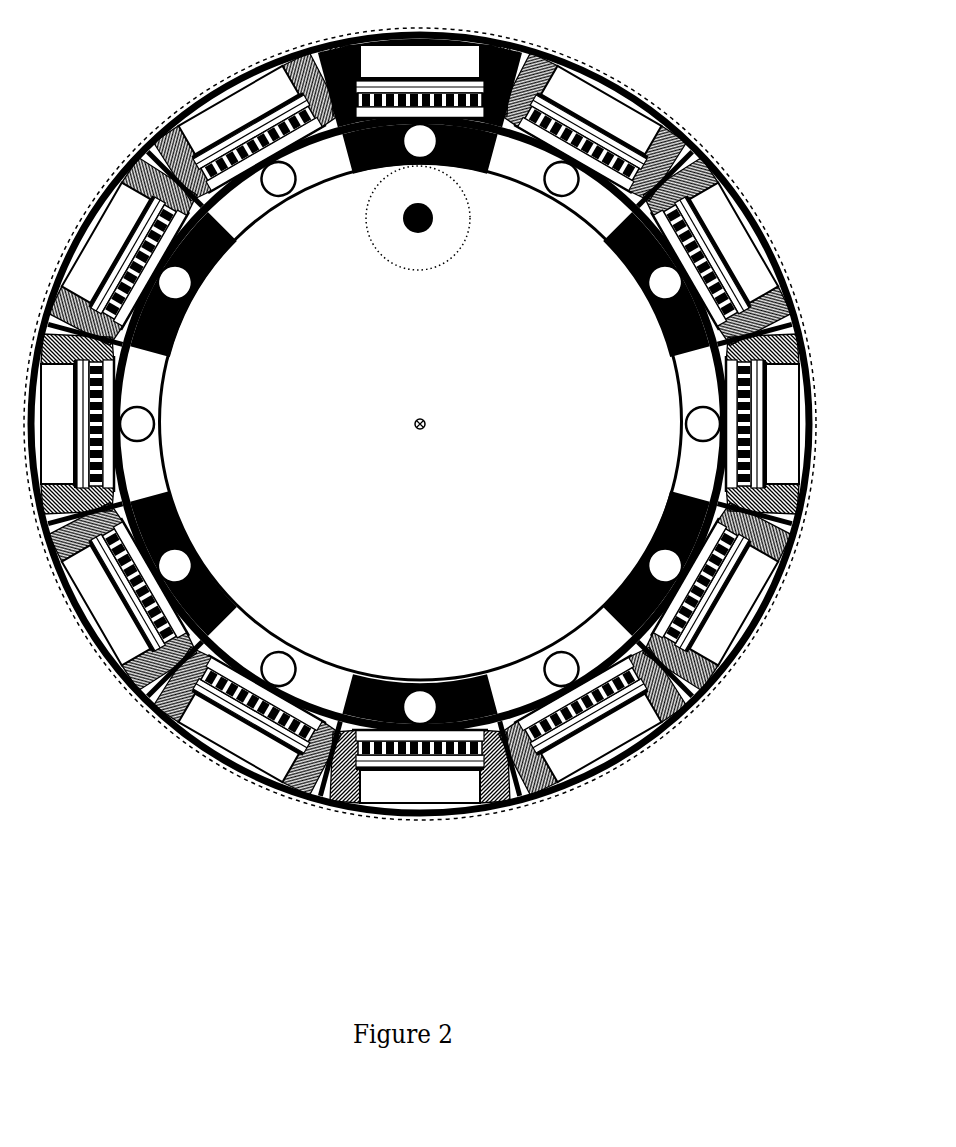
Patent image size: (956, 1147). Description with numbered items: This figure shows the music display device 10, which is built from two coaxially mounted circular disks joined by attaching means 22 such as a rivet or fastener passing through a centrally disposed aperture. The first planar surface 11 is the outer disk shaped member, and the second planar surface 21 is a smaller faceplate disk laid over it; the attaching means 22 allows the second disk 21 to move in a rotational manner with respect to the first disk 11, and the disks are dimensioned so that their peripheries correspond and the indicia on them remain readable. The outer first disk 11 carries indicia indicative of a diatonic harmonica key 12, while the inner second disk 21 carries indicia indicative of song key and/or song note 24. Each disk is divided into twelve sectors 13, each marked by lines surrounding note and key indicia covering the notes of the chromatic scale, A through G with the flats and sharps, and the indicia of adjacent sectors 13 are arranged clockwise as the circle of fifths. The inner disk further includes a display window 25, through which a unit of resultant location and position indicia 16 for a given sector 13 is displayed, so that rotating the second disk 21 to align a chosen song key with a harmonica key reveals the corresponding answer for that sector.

The music display device 10 is at (439, 475).
The first planar surface 11 is at (420, 433).
The indicia indicative of a diatonic harmonica key 12 is at (760, 227).
The sector 13 is at (176, 343).
The resultant location and position indicia 16 is at (390, 243).
The second planar surface 21 is at (142, 700).
The attaching means 22 is at (424, 436).
The indicia indicative of song key and/or song note 24 is at (285, 200).
The display window 25 is at (469, 237).